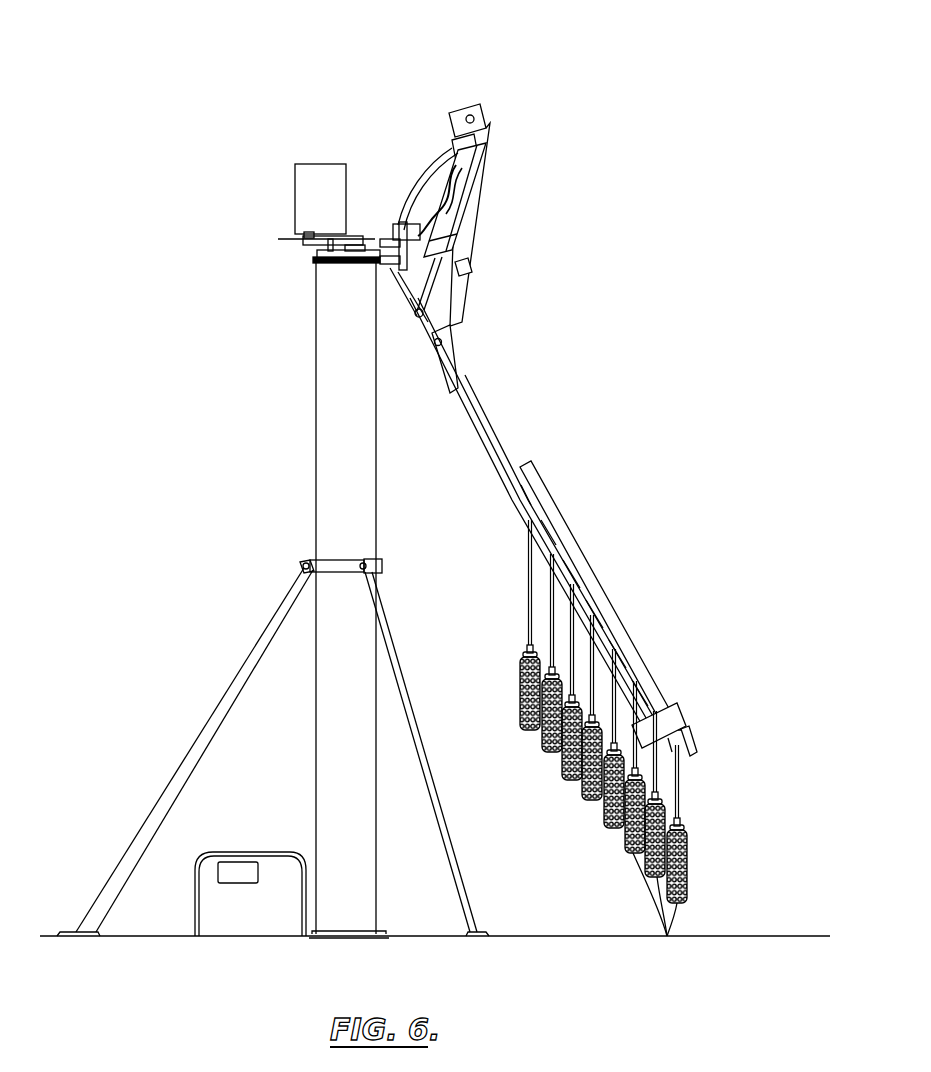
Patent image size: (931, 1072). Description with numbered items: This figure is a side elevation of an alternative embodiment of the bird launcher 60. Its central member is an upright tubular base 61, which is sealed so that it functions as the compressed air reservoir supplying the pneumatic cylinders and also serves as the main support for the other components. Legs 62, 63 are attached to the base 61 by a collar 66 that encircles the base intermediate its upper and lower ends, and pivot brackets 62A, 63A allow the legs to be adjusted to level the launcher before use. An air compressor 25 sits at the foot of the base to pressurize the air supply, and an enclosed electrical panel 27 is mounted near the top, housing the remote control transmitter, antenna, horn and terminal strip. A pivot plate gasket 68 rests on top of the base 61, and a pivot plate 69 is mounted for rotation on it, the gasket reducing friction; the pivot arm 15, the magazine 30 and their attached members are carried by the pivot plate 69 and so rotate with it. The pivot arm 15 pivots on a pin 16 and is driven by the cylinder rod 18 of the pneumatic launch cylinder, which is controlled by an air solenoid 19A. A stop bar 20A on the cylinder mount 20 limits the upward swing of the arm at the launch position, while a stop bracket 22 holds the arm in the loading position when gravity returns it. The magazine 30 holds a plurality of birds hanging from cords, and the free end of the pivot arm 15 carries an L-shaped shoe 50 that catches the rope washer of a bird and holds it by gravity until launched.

The bird launcher 60 is at (150, 268).
The upright tubular base 61 is at (320, 428).
The pivot plate gasket 68 is at (345, 266).
The pivot plate 69 is at (322, 249).
The enclosed electrical panel 27 is at (313, 182).
The cylinder rod 18 is at (440, 305).
The air solenoid 19A is at (470, 114).
The cylinder mount 20 is at (475, 216).
The stop bar 20A is at (470, 270).
The pin 16 is at (442, 342).
The pivot arm 15 is at (478, 410).
The magazine 30 is at (628, 622).
The stop bracket 22 is at (684, 724).
The L-shaped shoe 50 is at (679, 764).
The collar 66 is at (332, 558).
The pivot bracket 62A is at (300, 566).
The pivot bracket 63A is at (366, 558).
The leg 62 is at (133, 840).
The leg 63 is at (470, 942).
The air compressor 25 is at (258, 922).